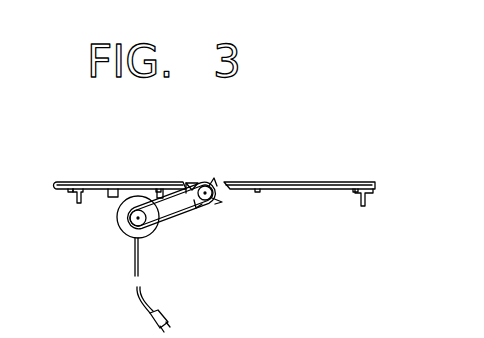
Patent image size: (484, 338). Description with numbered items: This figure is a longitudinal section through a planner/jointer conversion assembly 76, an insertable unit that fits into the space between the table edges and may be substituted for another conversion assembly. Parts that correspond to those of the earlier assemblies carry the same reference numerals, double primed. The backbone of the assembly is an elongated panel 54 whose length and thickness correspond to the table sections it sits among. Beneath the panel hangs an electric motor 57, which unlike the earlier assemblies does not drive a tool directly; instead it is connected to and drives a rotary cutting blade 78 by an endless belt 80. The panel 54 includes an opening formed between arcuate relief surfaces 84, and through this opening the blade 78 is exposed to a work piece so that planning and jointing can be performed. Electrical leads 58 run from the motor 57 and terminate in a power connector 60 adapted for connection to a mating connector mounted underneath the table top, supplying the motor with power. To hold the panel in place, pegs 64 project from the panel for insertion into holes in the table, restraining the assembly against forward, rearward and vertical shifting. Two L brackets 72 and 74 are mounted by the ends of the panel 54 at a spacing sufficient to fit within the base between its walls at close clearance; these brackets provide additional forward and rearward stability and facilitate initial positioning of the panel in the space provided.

The planner/jointer conversion assembly 76 is at (117, 178).
The elongated panel 54 is at (312, 182).
The peg 64 is at (70, 182).
The L bracket 72 is at (77, 196).
The L bracket 74 is at (370, 198).
The electric motor 57 is at (119, 236).
The endless belt 80 is at (178, 217).
The rotary cutting blade 78 is at (211, 186).
The arcuate relief surface 84 is at (190, 184).
The electrical lead 58 is at (140, 274).
The power connector 60 is at (169, 320).